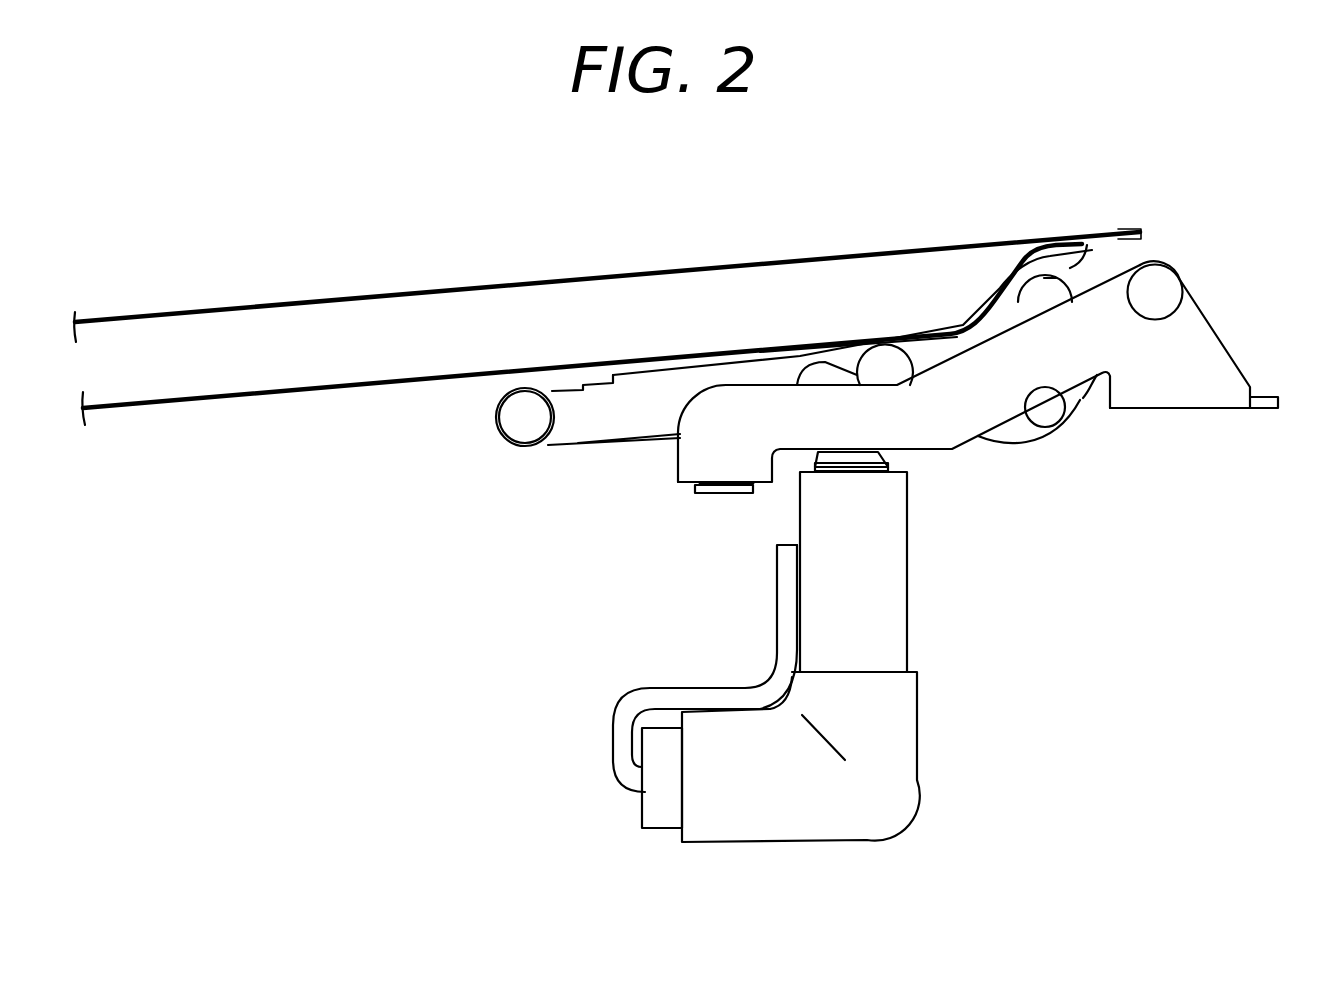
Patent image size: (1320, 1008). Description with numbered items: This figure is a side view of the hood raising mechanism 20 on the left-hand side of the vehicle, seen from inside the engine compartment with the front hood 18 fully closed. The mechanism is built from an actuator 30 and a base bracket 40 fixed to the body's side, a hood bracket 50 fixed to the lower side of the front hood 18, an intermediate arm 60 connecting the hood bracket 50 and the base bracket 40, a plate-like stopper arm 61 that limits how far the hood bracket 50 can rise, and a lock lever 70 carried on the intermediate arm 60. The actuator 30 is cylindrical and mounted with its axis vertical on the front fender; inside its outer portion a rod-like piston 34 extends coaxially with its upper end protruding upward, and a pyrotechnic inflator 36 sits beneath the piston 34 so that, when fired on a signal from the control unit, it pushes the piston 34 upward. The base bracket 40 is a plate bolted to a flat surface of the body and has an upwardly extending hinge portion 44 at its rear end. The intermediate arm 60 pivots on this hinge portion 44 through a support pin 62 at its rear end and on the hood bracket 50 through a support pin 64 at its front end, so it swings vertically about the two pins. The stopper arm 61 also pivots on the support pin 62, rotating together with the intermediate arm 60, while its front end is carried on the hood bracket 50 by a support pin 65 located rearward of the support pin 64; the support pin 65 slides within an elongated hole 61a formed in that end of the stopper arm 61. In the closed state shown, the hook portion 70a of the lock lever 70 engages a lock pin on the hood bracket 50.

The front hood 18 is at (549, 297).
The hood raising mechanism 20 is at (1192, 270).
The actuator 30 is at (890, 625).
The piston 34 is at (877, 473).
The inflator 36 is at (785, 803).
The base bracket 40 is at (1007, 390).
The hinge portion 44 is at (1207, 340).
The hood bracket 50 is at (613, 420).
The intermediate arm 60 is at (657, 442).
The stopper arm 61 is at (993, 318).
The elongated hole 61a is at (843, 377).
The support pin 62 is at (1162, 292).
The support pin 64 is at (517, 422).
The support pin 65 is at (884, 360).
The lock lever 70 is at (1073, 274).
The hook portion 70a is at (1050, 276).